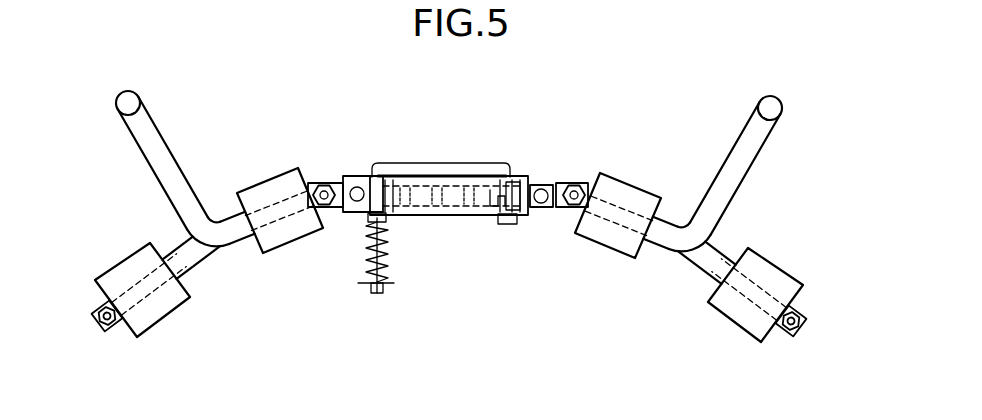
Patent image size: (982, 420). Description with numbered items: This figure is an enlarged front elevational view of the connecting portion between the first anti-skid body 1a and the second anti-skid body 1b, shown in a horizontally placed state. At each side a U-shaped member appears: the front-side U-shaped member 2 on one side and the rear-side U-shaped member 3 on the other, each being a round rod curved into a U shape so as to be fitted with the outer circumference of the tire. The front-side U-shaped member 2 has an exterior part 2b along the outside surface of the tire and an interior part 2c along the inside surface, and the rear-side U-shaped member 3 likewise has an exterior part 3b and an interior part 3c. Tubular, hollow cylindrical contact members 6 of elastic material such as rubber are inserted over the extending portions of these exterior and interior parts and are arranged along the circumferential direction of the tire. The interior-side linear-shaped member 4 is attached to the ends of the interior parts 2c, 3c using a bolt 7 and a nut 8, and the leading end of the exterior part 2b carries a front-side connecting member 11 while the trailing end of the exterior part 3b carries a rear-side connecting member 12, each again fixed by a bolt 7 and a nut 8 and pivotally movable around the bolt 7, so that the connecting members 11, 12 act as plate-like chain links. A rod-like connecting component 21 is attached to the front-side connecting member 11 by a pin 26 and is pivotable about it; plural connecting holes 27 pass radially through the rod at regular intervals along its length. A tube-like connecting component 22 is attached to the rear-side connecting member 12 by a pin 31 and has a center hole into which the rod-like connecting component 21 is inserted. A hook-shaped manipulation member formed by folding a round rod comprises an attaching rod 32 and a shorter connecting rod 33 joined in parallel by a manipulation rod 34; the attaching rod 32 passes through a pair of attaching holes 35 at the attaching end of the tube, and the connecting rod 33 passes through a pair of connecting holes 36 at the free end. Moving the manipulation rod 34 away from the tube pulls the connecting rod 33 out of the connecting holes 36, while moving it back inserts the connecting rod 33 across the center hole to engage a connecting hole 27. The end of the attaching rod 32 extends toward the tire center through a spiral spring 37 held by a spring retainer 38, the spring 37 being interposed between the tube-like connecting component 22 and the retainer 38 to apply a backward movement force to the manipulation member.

The first anti-skid body 1a is at (130, 225).
The second anti-skid body 1b is at (762, 230).
The front-side U-shaped member 2 is at (733, 97).
The exterior part 2b is at (707, 197).
The interior part 2c is at (693, 252).
The rear-side U-shaped member 3 is at (175, 88).
The exterior part 3b is at (227, 210).
The interior part 3c is at (196, 257).
The interior-side linear-shaped member 4 is at (107, 318).
The contact member 6 is at (277, 247).
The bolt 7 is at (316, 186).
The nut 8 is at (327, 184).
The front-side connecting member 11 is at (553, 214).
The rear-side connecting member 12 is at (350, 222).
The rod-like connecting component 21 is at (449, 162).
The tube-like connecting component 22 is at (448, 216).
The pin 26 is at (543, 186).
The connecting hole 27 is at (473, 226).
The pin 31 is at (355, 176).
The attaching rod 32 is at (377, 290).
The connecting rod 33 is at (503, 220).
The manipulation rod 34 is at (482, 162).
The attaching hole 35 is at (388, 172).
The connecting hole 36 is at (517, 216).
The spiral spring 37 is at (388, 256).
The spring retainer 38 is at (389, 281).